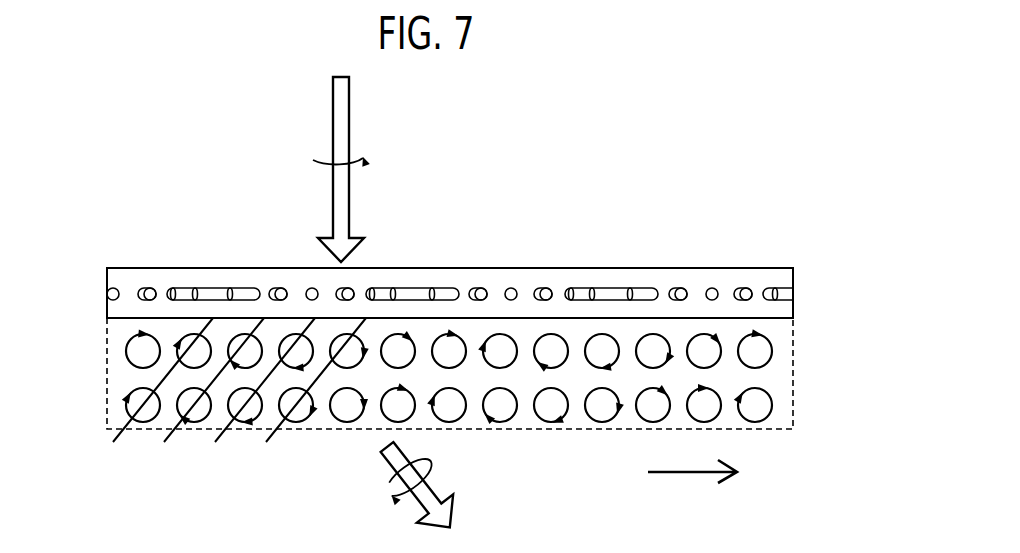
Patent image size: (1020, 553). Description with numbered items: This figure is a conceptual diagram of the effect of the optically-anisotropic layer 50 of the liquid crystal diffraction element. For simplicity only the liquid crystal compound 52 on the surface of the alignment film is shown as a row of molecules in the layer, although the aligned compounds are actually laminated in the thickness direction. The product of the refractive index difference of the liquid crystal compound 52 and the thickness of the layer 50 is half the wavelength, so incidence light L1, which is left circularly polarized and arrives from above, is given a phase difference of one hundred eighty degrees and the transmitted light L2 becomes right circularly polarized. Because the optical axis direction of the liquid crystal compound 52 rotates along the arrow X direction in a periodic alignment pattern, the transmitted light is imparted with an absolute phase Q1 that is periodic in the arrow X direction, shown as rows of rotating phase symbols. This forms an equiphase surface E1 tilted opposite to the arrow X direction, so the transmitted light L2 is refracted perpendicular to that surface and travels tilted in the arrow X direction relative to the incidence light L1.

The optically-anisotropic layer 50 is at (581, 243).
The liquid crystal compound 52 is at (213, 292).
The absolute phase Q1 is at (123, 350).
The equiphase surface E1 is at (120, 432).
The incidence light L1 is at (342, 90).
The transmitted light L2 is at (445, 508).
The arrow X direction X is at (685, 474).